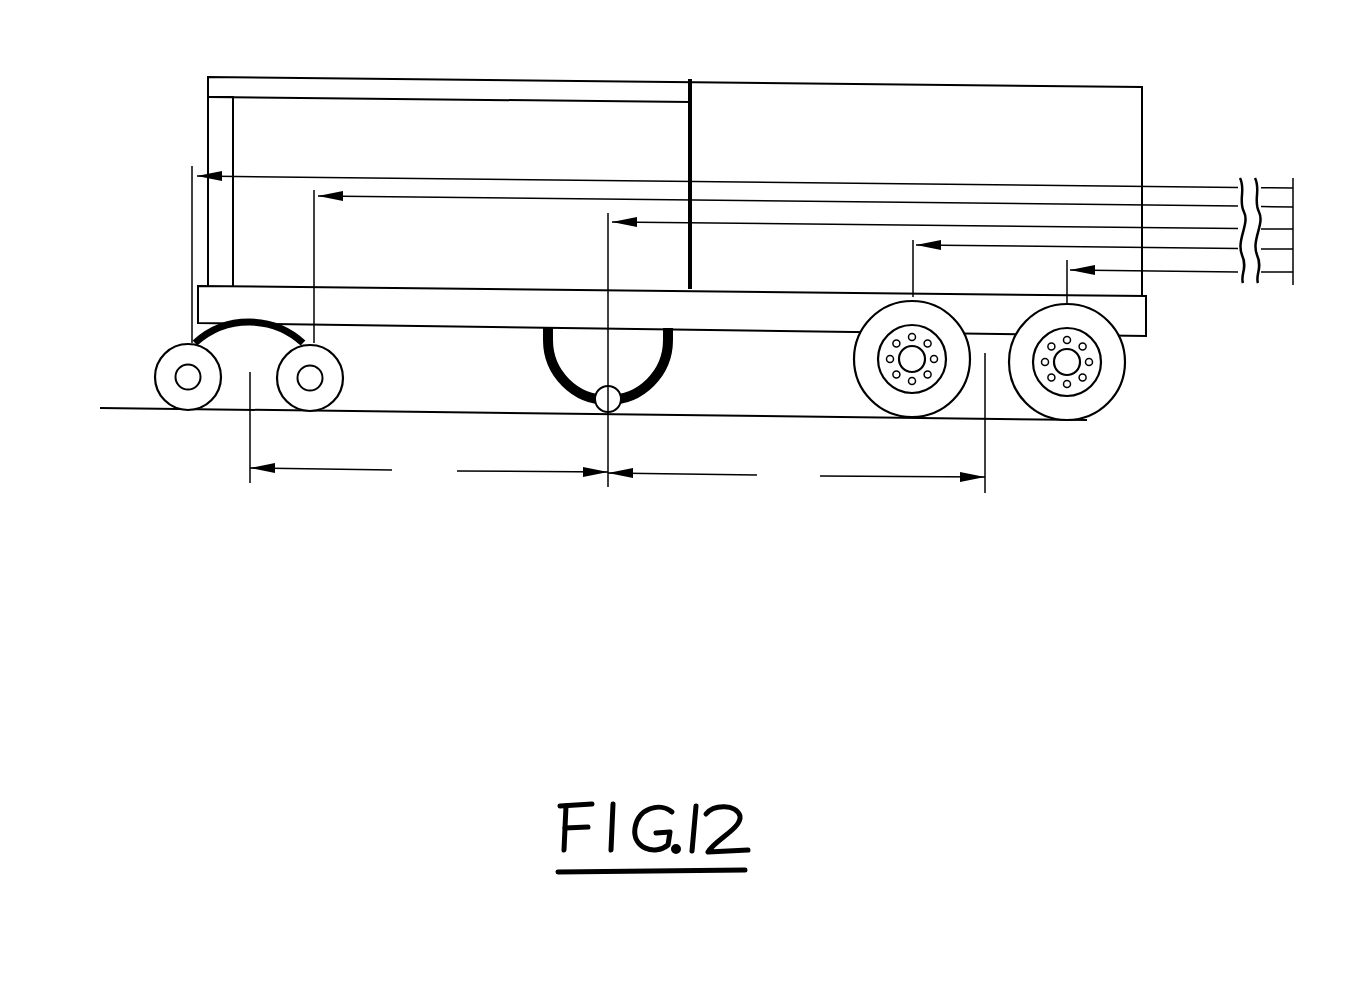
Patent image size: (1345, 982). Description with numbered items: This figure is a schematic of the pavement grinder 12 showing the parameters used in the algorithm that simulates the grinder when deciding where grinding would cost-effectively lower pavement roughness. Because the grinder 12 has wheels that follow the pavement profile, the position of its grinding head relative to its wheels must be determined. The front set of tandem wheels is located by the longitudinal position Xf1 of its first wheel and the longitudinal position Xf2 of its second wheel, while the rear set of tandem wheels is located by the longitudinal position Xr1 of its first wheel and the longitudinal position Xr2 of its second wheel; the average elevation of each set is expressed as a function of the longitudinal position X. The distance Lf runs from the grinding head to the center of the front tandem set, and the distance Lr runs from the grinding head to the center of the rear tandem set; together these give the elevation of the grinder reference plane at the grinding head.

The pavement grinder 12 is at (1163, 102).
The longitudinal position of the first wheel of the front set of tandem wheels Xf1 is at (710, 248).
The longitudinal position of the second wheel of the front set of tandem wheels Xf2 is at (803, 266).
The longitudinal position X is at (936, 350).
The longitudinal position of the first wheel of the rear set of tandem wheels Xr1 is at (1073, 265).
The longitudinal position of the second wheel of the rear set of tandem wheels Xr2 is at (1151, 278).
The distance from the grinding head to the center of the front set of tandem wheels Lf is at (429, 437).
The distance from the grinding head to the center of the rear set of tandem wheels Lr is at (796, 429).